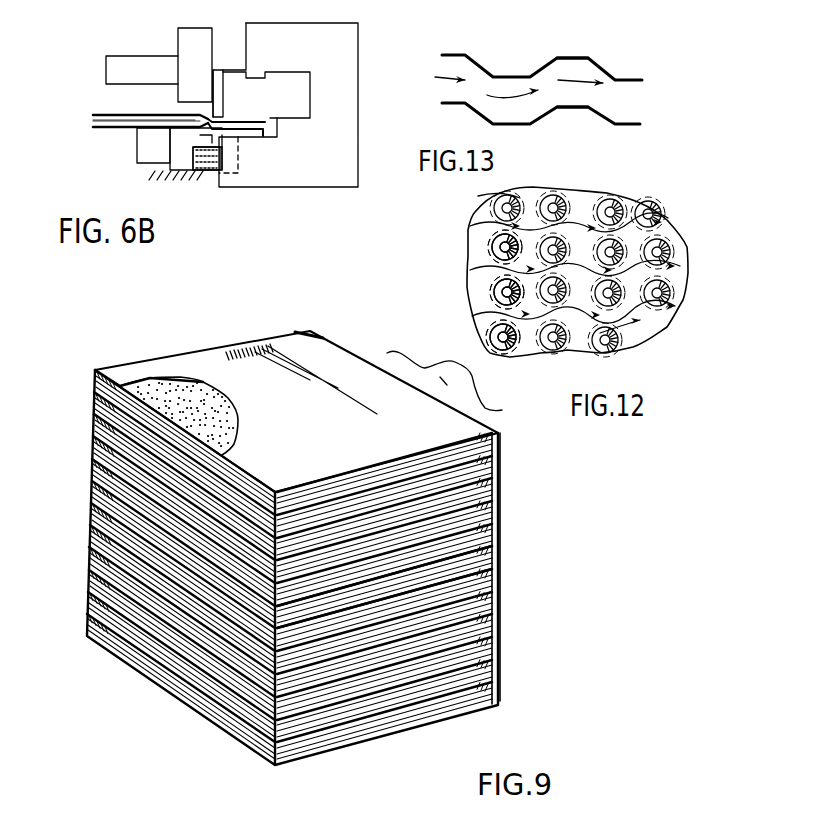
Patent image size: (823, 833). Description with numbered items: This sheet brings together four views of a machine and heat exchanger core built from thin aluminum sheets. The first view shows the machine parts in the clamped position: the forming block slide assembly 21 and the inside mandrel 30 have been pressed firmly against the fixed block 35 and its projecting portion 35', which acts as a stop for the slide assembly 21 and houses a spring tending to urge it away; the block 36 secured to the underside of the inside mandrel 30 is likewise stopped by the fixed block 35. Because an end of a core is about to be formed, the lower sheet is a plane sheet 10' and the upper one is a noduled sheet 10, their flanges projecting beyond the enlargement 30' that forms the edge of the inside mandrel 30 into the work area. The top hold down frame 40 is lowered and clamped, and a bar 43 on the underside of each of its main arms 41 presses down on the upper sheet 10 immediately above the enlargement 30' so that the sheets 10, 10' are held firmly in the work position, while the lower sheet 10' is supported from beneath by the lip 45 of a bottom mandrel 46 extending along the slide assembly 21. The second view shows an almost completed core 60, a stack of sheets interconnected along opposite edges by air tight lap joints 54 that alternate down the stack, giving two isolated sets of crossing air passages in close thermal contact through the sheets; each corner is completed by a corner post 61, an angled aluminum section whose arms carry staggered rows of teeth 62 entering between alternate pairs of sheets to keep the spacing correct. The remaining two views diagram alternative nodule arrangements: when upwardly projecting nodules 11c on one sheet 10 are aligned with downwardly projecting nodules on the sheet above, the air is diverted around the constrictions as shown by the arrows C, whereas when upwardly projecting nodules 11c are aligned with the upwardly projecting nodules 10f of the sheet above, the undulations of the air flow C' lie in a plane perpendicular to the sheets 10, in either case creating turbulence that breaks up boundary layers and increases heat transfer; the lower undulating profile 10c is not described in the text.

In FIG. 6B, the sheet 10 is at (126, 106).
In FIG. 13, the sheet 10 is at (558, 81).
In FIG. 9, the sheet 10 is at (269, 548).
In FIG. 6B, the plane sheet 10' is at (129, 141).
In FIG. 9, the plane sheet 10' is at (236, 387).
In FIG. 13, the upwardly projecting nodules 10f is at (570, 58).
In FIG. 13, the film crest 10c is at (563, 107).
In FIG. 12, the upwardly projecting nodules 11c is at (497, 248).
In FIG. 6B, the forming block slide assembly 21 is at (328, 40).
In FIG. 6B, the inside mandrel 30 is at (194, 111).
In FIG. 6B, the enlargement 30' is at (266, 95).
In FIG. 6B, the fixed block 35 is at (171, 162).
In FIG. 6B, the projecting portion 35' is at (216, 184).
In FIG. 6B, the block 36 is at (140, 143).
In FIG. 6B, the top hold down frame 40 is at (138, 63).
In FIG. 6B, the main arms 41 is at (185, 40).
In FIG. 6B, the bar 43 is at (207, 110).
In FIG. 6B, the lip 45 is at (195, 140).
In FIG. 6B, the bottom mandrel 46 is at (215, 140).
In FIG. 9, the air tight lap joints 54 is at (90, 557).
In FIG. 9, the core 60 is at (458, 386).
In FIG. 9, the corner post 61 is at (497, 500).
In FIG. 9, the teeth 62 is at (488, 613).
In FIG. 12, the arrows C is at (577, 288).
In FIG. 13, the air flow C' is at (490, 55).